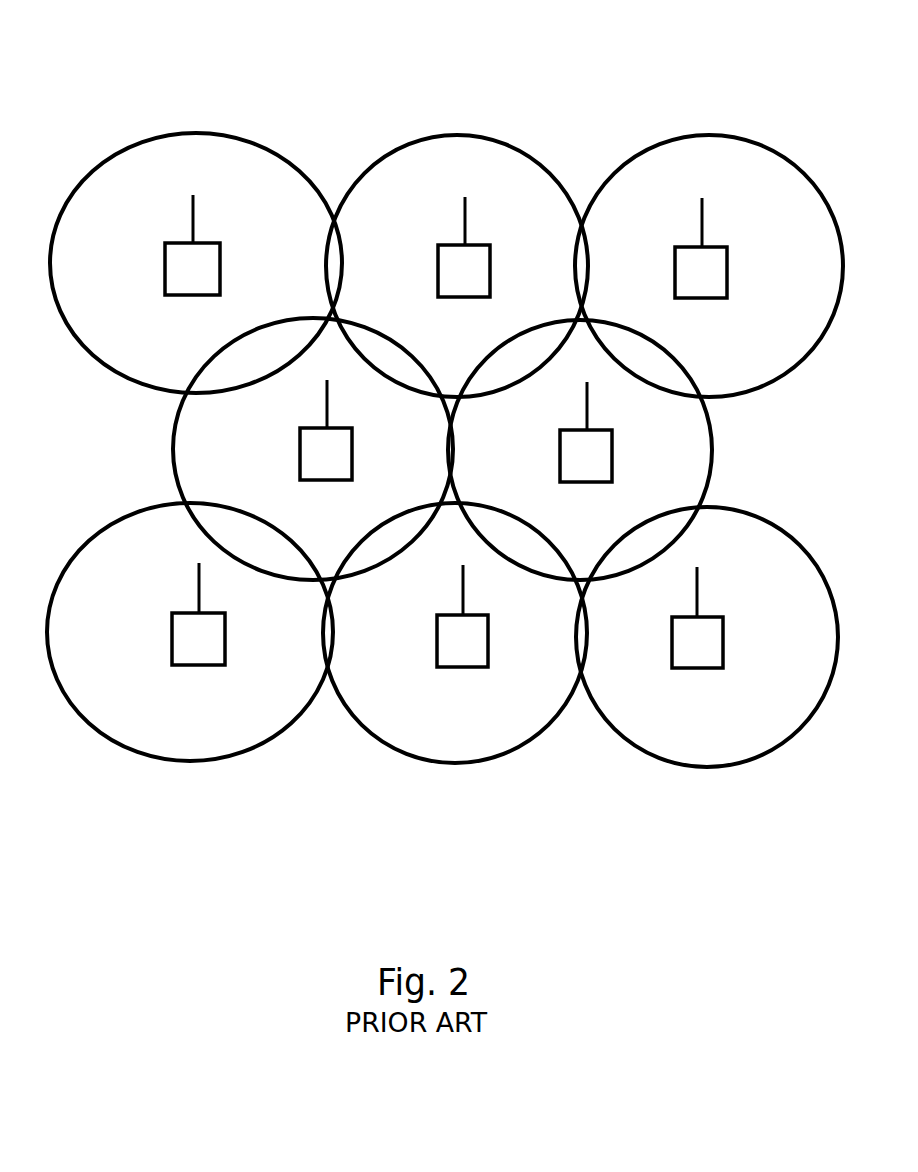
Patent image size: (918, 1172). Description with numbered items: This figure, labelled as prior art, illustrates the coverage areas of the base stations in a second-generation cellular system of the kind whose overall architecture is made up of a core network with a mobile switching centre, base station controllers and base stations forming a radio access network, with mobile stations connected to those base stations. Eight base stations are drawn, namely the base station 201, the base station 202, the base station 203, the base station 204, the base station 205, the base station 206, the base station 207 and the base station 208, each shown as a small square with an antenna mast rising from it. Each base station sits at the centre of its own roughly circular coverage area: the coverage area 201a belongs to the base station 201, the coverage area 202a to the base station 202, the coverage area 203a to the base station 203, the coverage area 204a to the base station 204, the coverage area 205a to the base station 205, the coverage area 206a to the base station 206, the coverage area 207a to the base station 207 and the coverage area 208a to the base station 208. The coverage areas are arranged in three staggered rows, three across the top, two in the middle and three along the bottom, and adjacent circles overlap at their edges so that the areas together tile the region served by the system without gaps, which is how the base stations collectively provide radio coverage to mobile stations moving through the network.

The base station 201 is at (240, 238).
The base station 202 is at (508, 240).
The base station 203 is at (728, 267).
The base station 204 is at (353, 448).
The base station 205 is at (630, 427).
The base station 206 is at (242, 602).
The base station 207 is at (489, 638).
The base station 208 is at (724, 643).
The coverage area 201a is at (196, 240).
The coverage area 202a is at (457, 238).
The coverage area 203a is at (709, 235).
The coverage area 204a is at (259, 449).
The coverage area 205a is at (639, 450).
The coverage area 206a is at (190, 668).
The coverage area 207a is at (455, 665).
The coverage area 208a is at (707, 665).